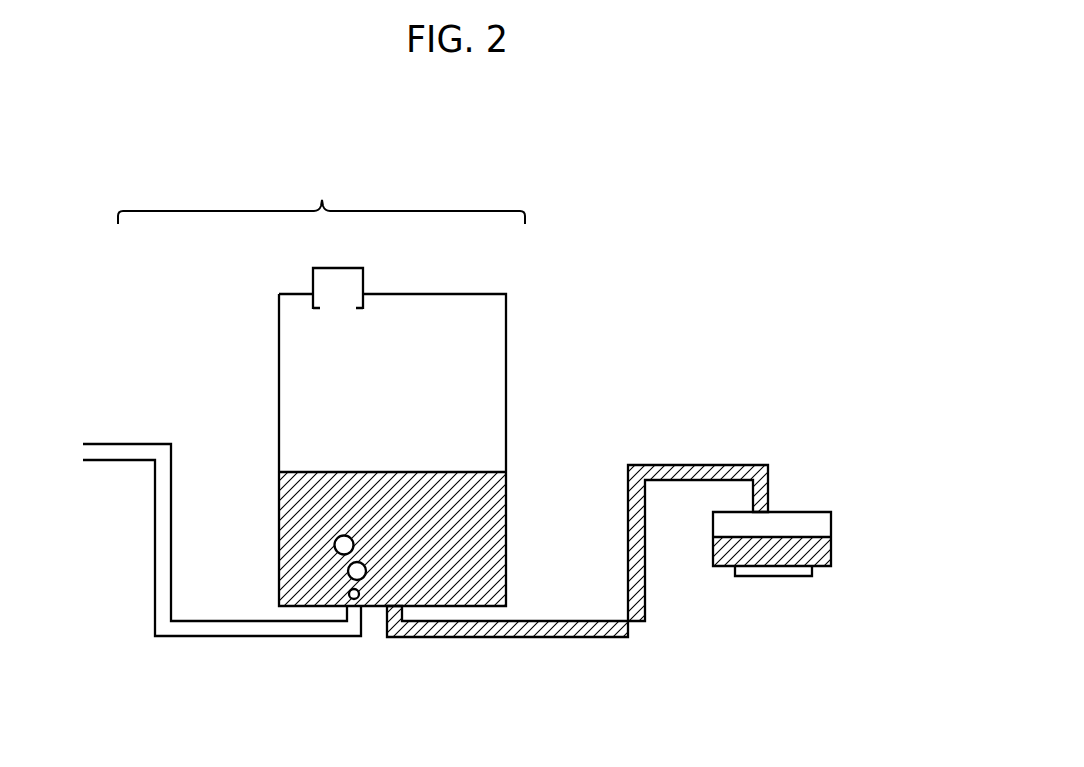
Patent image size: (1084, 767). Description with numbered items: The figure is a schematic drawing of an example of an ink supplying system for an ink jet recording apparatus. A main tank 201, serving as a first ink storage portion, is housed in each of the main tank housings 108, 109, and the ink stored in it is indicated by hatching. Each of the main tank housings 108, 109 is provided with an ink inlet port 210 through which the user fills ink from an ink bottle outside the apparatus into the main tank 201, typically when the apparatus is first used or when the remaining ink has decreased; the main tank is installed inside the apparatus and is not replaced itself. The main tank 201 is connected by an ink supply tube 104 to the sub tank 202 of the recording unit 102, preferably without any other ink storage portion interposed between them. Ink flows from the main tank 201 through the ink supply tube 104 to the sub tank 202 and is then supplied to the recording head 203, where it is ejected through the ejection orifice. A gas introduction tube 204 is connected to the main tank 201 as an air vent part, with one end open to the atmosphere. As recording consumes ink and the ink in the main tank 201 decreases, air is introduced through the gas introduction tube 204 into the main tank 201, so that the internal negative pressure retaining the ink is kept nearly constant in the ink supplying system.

The recording unit 102 is at (816, 525).
The ink supply tube 104 is at (687, 462).
The main tank housing 108 is at (321, 198).
The main tank housing 109 is at (321, 212).
The main tank 201 is at (467, 320).
The sub tank 202 is at (820, 522).
The recording head 203 is at (777, 577).
The gas introduction tube 204 is at (122, 443).
The ink inlet port 210 is at (324, 290).